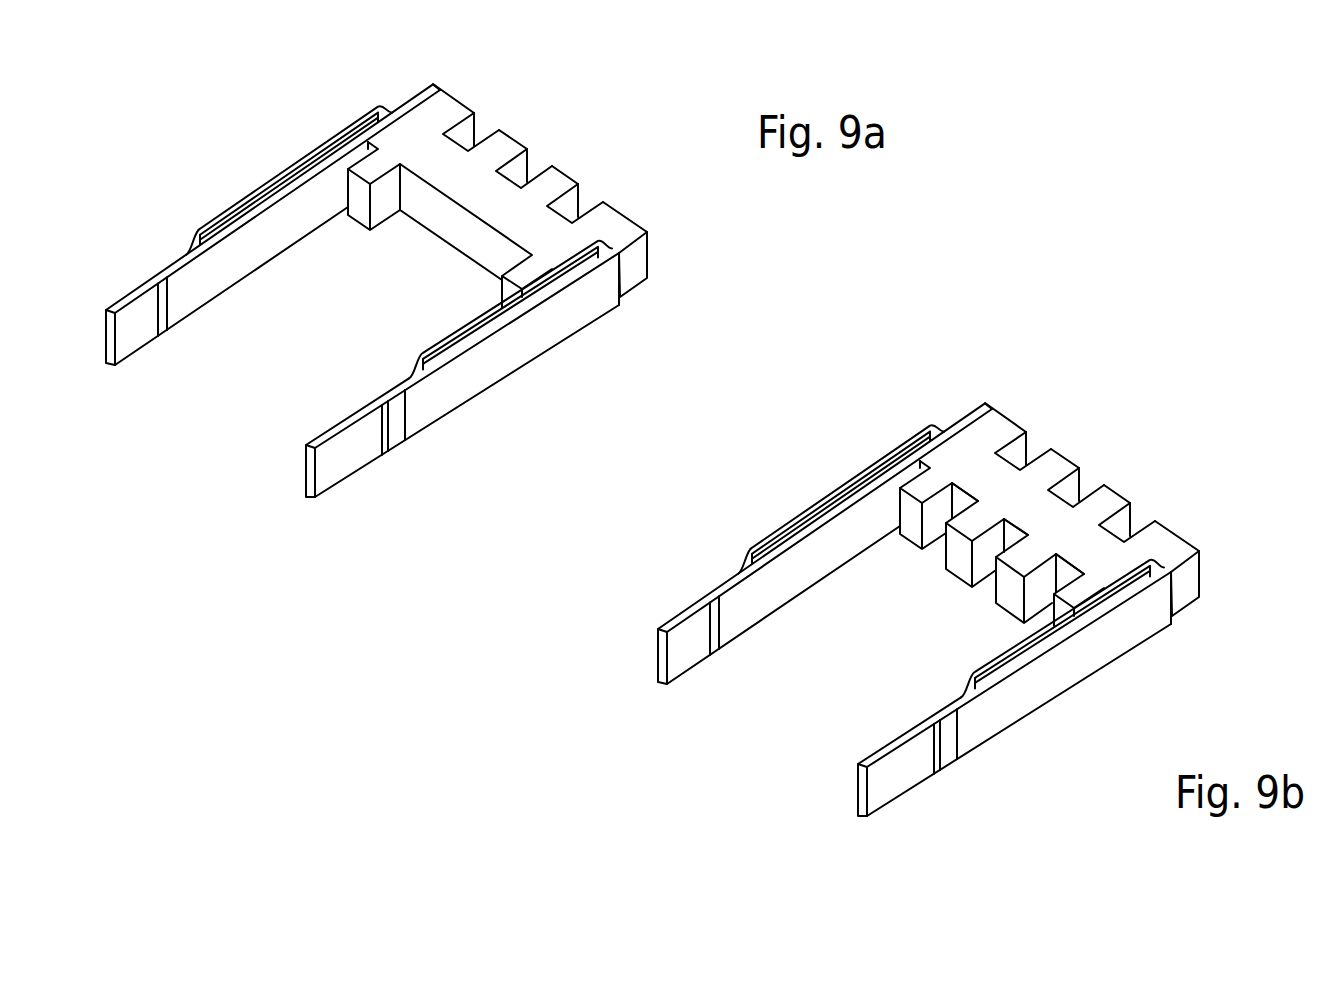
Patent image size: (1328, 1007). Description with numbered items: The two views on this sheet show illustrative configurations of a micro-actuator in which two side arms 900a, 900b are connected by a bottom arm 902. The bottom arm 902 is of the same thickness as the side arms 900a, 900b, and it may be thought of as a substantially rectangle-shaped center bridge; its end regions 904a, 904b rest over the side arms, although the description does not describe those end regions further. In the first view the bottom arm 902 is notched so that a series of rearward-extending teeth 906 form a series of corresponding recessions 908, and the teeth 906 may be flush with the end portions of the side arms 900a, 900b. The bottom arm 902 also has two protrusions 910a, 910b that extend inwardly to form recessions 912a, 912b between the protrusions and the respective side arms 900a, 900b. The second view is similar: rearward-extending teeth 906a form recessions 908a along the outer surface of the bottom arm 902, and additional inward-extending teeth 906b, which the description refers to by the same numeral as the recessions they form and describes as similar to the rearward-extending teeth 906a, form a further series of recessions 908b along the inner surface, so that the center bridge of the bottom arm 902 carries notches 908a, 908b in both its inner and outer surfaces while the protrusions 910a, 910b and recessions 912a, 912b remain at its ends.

In FIG. 9A, the side arm 900a is at (143, 362).
In FIG. 9B, the side arm 900a is at (789, 580).
In FIG. 9A, the side arm 900b is at (310, 506).
In FIG. 9B, the side arm 900b is at (964, 716).
In FIG. 9A, the bottom arm 902 is at (487, 196).
In FIG. 9B, the bottom arm 902 is at (1080, 523).
In FIG. 9A, the first end portion of cross member 904a is at (440, 96).
In FIG. 9B, the first end portion of cross member 904a is at (978, 387).
In FIG. 9A, the second end portion of cross member 904b is at (625, 211).
In FIG. 9B, the second end portion of cross member 904b is at (1240, 574).
In FIG. 9A, the rearward-extending teeth 906 is at (500, 145).
In FIG. 9A, the recessions 908 is at (485, 123).
In FIG. 9B, the rearward-extending teeth 906a is at (1140, 448).
In FIG. 9B, the recessions 908a is at (1136, 427).
In FIG. 9B, the front tabs 906b is at (963, 548).
In FIG. 9B, the recessions 908b is at (930, 548).
In FIG. 9A, the protrusion 910a is at (364, 186).
In FIG. 9B, the protrusion 910a is at (905, 492).
In FIG. 9A, the protrusion 910b is at (518, 272).
In FIG. 9B, the protrusion 910b is at (1088, 592).
In FIG. 9A, the recession 912a is at (357, 158).
In FIG. 9B, the recession 912a is at (841, 475).
In FIG. 9A, the recession 912b is at (548, 280).
In FIG. 9B, the recession 912b is at (1120, 629).